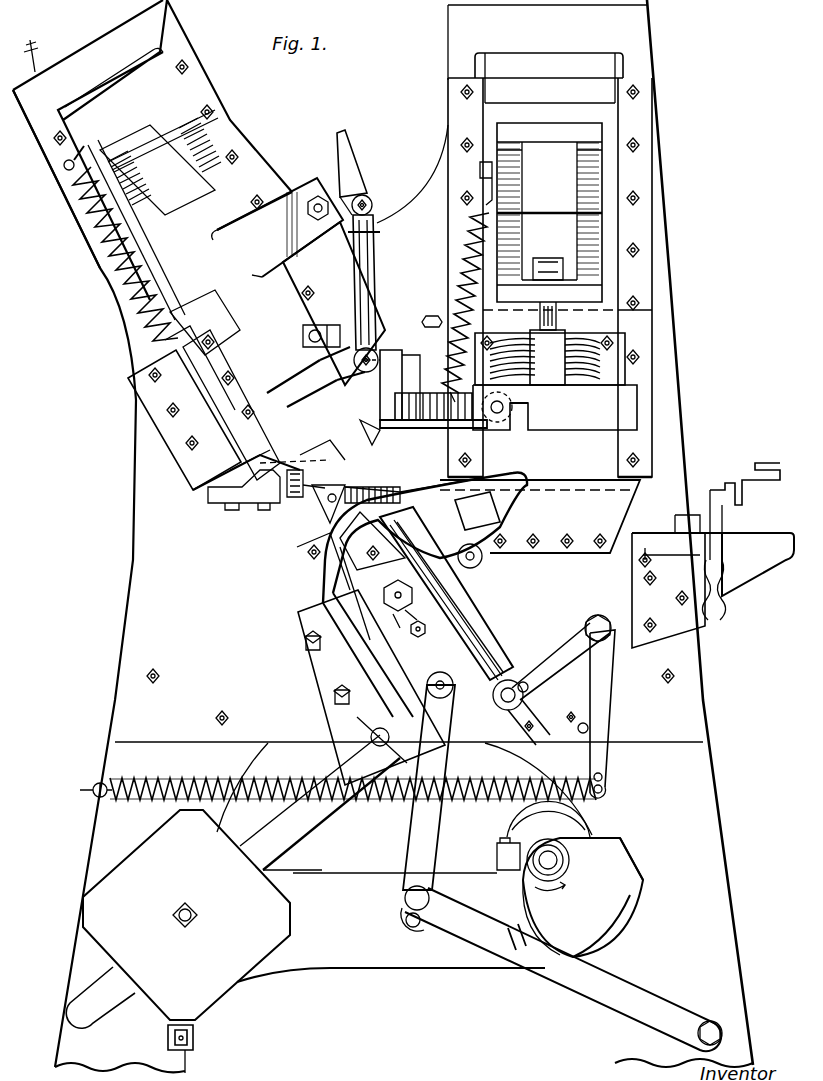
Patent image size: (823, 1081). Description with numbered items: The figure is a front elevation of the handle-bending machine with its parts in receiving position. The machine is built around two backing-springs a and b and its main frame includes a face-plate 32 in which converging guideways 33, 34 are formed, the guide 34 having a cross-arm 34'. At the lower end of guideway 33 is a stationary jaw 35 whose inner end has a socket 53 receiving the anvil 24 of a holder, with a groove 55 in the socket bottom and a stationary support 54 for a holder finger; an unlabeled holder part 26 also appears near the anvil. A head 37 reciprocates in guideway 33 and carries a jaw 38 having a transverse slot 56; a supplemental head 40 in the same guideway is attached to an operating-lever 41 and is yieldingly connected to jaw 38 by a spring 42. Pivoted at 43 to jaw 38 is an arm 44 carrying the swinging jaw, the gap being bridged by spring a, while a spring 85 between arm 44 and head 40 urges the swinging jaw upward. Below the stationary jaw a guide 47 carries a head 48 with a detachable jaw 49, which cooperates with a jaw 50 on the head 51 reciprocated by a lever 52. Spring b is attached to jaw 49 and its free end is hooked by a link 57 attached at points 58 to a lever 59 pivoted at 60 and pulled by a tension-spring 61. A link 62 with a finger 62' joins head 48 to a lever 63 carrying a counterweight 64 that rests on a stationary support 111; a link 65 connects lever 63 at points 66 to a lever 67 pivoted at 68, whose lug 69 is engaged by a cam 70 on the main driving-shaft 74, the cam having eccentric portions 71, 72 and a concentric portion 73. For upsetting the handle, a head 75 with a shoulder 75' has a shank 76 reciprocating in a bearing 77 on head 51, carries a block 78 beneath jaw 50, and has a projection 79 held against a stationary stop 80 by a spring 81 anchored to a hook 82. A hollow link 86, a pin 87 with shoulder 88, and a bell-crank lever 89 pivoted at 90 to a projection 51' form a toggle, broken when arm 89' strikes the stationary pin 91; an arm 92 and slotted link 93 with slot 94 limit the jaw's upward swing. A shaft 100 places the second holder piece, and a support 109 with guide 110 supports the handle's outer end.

The anvil 24 is at (450, 500).
The lever arm 26 is at (340, 573).
The face-plate 32 is at (412, 208).
The guideway 33 is at (478, 66).
The guideway 34 is at (115, 77).
The cross-arm 34' is at (152, 150).
The stationary jaw 35 is at (605, 512).
The head 37 is at (607, 315).
The jaw 38 is at (555, 407).
The supplemental head 40 is at (605, 215).
The operating-lever 41 is at (549, 254).
The spring 42 is at (600, 362).
The pivot 43 is at (497, 414).
The arm 44 is at (428, 380).
The guide 47 is at (528, 708).
The head 48 is at (430, 590).
The detachable jaw 49 is at (372, 541).
The jaw 50 is at (312, 458).
The head 51 is at (318, 303).
The projection 51' is at (280, 208).
The lever 52 is at (160, 162).
The socket 53 is at (476, 525).
The stationary support 54 is at (324, 578).
The groove 55 is at (478, 560).
The transverse slot 56 is at (529, 426).
The link 57 is at (490, 655).
The attachment points 58 is at (512, 688).
The lever 59 is at (557, 665).
The pivot 60 is at (598, 624).
The tension-spring 61 is at (385, 800).
The link 62 is at (371, 682).
The finger 62' is at (425, 736).
The lever 63 is at (266, 842).
The counterweight 64 is at (178, 919).
The link 65 is at (420, 845).
The attachment points 66 is at (418, 924).
The lever 67 is at (563, 969).
The pivot 68 is at (711, 1030).
The lug 69 is at (512, 948).
The cam 70 is at (635, 882).
The eccentric portion 71 is at (558, 952).
The eccentric portion 72 is at (632, 862).
The concentric portion 73 is at (622, 885).
The main driving-shaft 74 is at (558, 862).
The head 75 is at (247, 520).
The shoulder 75' is at (239, 504).
The shank 76 is at (218, 470).
The bearing 77 is at (175, 425).
The block 78 is at (298, 497).
The projection 79 is at (148, 363).
The stationary stop 80 is at (142, 352).
The spring 81 is at (108, 280).
The hook 82 is at (64, 168).
The spring 85 is at (458, 286).
The hollow link 86 is at (375, 345).
The pin 87 is at (374, 220).
The shoulder 88 is at (374, 253).
The bell-crank lever 89 is at (337, 225).
The arm 89' is at (359, 161).
The pivot 90 is at (318, 198).
The stationary projecting pin 91 is at (430, 320).
The arm 92 is at (303, 358).
The link 93 is at (350, 352).
The slot 94 is at (370, 433).
The shaft 100 is at (432, 538).
The support 109 is at (713, 581).
The guide 110 is at (757, 485).
The stationary support 111 is at (194, 1034).
The backing-spring a is at (433, 421).
The spring b is at (374, 479).